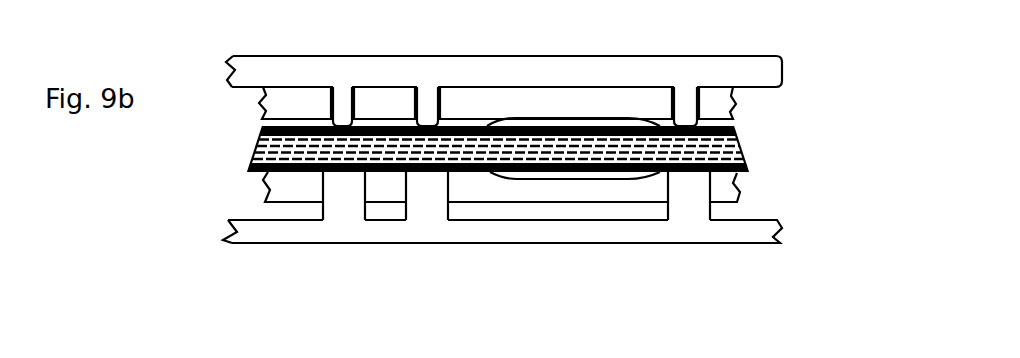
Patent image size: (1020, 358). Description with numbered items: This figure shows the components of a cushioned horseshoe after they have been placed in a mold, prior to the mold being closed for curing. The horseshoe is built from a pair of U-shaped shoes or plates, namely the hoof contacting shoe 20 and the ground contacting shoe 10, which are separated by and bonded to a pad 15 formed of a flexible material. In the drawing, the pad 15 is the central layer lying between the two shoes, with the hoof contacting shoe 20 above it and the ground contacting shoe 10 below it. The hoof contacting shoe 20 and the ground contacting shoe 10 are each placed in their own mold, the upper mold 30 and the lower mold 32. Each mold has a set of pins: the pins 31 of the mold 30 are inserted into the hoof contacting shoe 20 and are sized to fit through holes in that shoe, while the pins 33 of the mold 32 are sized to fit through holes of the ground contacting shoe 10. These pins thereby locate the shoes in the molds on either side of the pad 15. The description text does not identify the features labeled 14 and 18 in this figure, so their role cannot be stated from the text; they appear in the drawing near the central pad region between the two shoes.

The ground contacting shoe 10 is at (727, 197).
The seal projection 14 is at (555, 178).
The pad 15 is at (735, 148).
The projection 18 is at (550, 127).
The hoof contacting shoe 20 is at (735, 100).
The mold 30 is at (243, 67).
The pins 31 is at (338, 120).
The mold 32 is at (283, 233).
The pins 33 is at (342, 198).